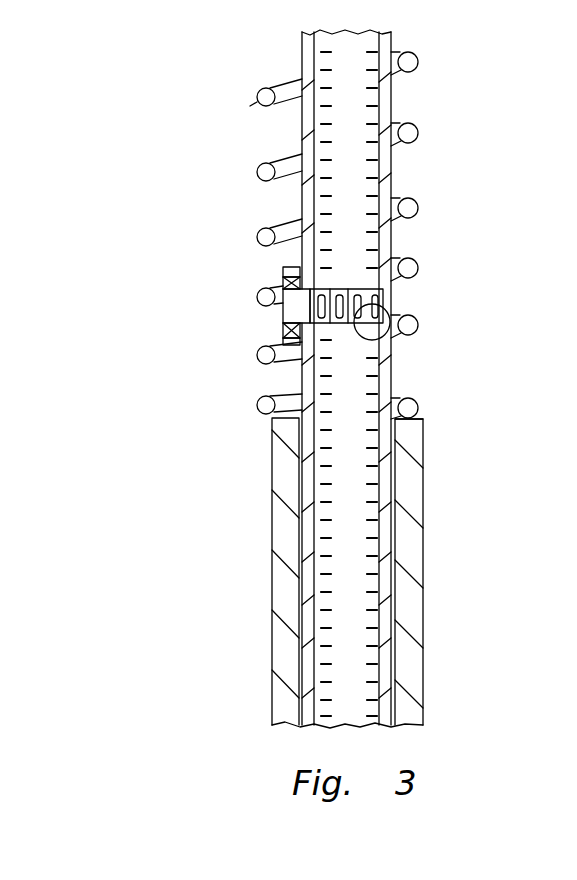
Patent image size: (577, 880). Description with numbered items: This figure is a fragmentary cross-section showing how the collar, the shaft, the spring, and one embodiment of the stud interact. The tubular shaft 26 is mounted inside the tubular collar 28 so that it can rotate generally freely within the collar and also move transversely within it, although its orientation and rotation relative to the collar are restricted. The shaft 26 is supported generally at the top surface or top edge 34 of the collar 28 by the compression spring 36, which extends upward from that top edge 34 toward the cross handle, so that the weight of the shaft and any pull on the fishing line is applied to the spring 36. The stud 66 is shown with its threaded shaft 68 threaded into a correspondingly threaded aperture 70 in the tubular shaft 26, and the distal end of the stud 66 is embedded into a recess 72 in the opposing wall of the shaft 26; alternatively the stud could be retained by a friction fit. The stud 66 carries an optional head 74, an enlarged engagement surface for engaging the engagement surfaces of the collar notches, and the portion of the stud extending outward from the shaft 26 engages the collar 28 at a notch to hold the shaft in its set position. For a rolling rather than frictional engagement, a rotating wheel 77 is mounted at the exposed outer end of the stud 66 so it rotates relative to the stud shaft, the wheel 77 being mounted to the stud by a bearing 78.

The shaft 26 is at (392, 100).
The compression spring 36 is at (258, 100).
The stud 66 is at (276, 317).
The threaded shaft 68 is at (350, 289).
The threaded aperture 70 is at (314, 289).
The recess 72 is at (374, 344).
The head 74 is at (277, 274).
The rotating wheel 77 is at (283, 268).
The bearing 78 is at (283, 340).
The tubular collar 28 is at (423, 512).
The top edge 34 is at (423, 419).